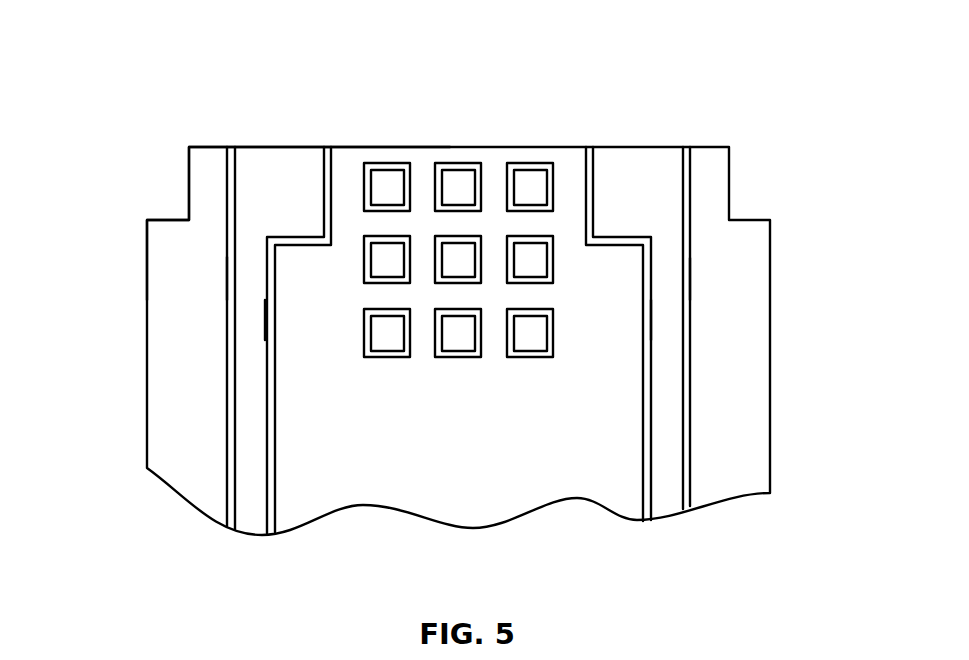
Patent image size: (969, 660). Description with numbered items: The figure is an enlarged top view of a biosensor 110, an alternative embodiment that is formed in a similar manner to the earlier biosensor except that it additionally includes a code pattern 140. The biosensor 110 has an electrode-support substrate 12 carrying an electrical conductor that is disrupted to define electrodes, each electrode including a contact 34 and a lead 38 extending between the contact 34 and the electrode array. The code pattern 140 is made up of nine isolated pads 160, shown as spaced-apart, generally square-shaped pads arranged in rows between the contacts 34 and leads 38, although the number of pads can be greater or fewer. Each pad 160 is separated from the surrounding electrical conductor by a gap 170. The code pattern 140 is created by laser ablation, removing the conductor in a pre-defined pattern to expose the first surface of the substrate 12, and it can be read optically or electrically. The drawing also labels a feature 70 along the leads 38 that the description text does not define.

The electrode-support substrate 12 is at (143, 380).
The biosensor 110 is at (158, 190).
The contact 34 is at (282, 170).
The lead 38 is at (243, 428).
The trench 70 is at (265, 332).
The code pattern 140 is at (462, 158).
The isolated pad 160 is at (391, 176).
The gap 170 is at (530, 167).